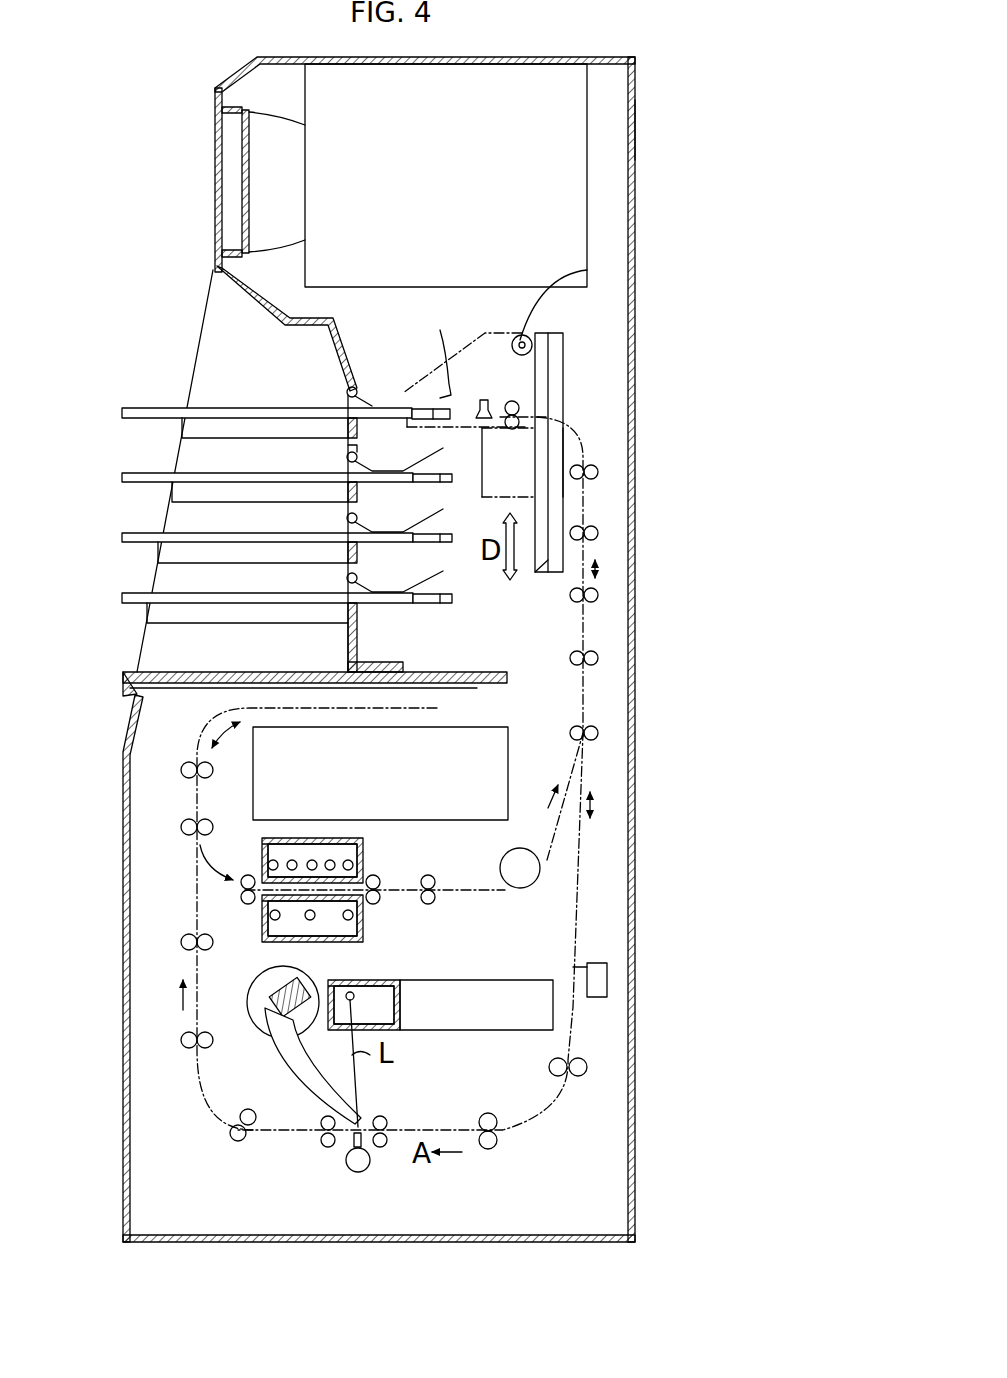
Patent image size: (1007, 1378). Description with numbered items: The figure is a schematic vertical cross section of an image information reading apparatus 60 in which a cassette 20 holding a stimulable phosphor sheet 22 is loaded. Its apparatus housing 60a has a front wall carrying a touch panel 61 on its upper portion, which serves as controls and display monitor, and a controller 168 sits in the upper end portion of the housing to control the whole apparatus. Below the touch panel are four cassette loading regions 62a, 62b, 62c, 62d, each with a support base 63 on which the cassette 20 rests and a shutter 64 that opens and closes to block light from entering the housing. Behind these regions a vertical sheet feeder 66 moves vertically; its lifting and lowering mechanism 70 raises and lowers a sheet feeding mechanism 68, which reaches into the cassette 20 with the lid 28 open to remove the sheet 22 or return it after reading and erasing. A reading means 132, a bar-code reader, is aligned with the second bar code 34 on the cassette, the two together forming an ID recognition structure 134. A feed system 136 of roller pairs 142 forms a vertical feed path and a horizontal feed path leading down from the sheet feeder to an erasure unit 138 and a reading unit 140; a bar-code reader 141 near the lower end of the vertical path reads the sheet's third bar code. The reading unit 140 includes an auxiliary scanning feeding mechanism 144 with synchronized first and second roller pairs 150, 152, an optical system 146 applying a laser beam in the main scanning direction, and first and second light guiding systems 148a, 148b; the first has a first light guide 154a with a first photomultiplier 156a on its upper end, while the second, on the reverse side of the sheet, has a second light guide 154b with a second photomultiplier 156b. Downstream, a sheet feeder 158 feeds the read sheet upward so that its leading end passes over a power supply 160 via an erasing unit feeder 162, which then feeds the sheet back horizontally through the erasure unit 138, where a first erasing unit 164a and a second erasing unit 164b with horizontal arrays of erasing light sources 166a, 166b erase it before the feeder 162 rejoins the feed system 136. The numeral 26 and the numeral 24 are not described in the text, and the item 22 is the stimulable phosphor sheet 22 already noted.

The image information reading apparatus 60 is at (672, 28).
The apparatus housing 60a is at (637, 126).
The touch panel 61 is at (240, 190).
The controller 168 is at (570, 200).
The vertical sheet feeder 66 is at (500, 326).
The lifting and lowering mechanism 70 is at (556, 331).
The sheet feed path 26 is at (440, 398).
The lid 28 is at (427, 397).
The cassette loading region 62a is at (138, 400).
The cassette loading region 62b is at (138, 470).
The cassette loading region 62c is at (138, 530).
The cassette loading region 62d is at (138, 593).
The second bar code 34 is at (420, 493).
The shutter 64 is at (360, 404).
The cassette 20 is at (238, 405).
The stimulable phosphor sheet 22 is at (283, 407).
The support base 63 is at (262, 430).
The tray end 24 is at (385, 420).
The reading means 132 is at (448, 402).
The sheet feeding mechanism 68 is at (530, 410).
The ID recognition structure 134 is at (448, 437).
The feed system 136 is at (602, 650).
The roller pairs 142 is at (600, 728).
The power supply 160 is at (472, 735).
The erasing unit feeder 162 is at (185, 802).
The sheet feeder 158 is at (185, 1062).
The first erasing unit 164a is at (346, 836).
The erasing light sources 166a is at (302, 860).
The erasure unit 138 is at (433, 861).
The second erasing unit 164b is at (306, 944).
The erasing light sources 166b is at (272, 916).
The reading unit 140 is at (435, 976).
The optical system 146 is at (485, 976).
The bar-code reader 141 is at (607, 967).
The first photomultiplier 156a is at (265, 1003).
The first light guiding system 148a is at (282, 1070).
The first light guide 154a is at (321, 1090).
The auxiliary scanning feeding mechanism 144 is at (380, 1098).
The first roller pair 150 is at (385, 1117).
The second roller pair 152 is at (322, 1119).
The second light guide 154b is at (352, 1143).
The second photomultiplier 156b is at (352, 1172).
The second light guiding system 148b is at (375, 1172).